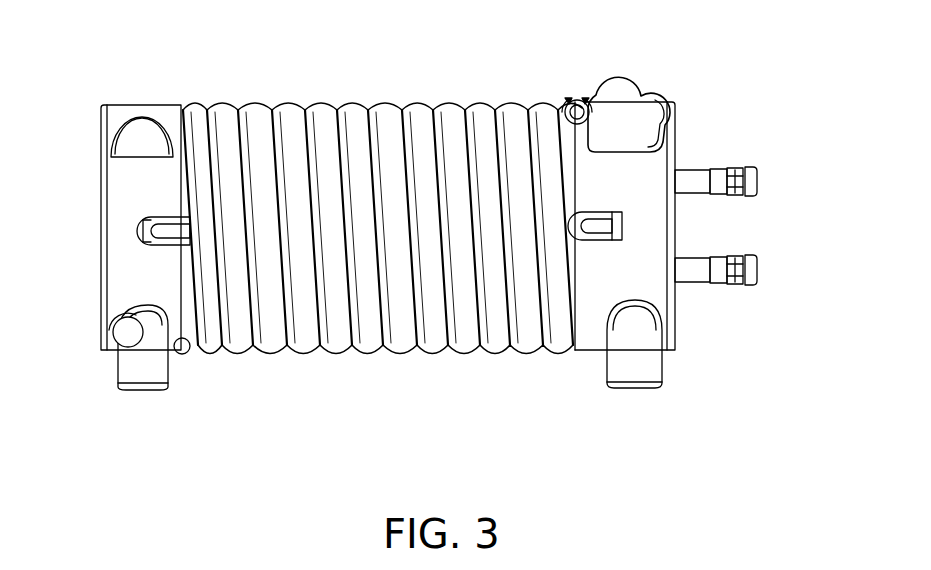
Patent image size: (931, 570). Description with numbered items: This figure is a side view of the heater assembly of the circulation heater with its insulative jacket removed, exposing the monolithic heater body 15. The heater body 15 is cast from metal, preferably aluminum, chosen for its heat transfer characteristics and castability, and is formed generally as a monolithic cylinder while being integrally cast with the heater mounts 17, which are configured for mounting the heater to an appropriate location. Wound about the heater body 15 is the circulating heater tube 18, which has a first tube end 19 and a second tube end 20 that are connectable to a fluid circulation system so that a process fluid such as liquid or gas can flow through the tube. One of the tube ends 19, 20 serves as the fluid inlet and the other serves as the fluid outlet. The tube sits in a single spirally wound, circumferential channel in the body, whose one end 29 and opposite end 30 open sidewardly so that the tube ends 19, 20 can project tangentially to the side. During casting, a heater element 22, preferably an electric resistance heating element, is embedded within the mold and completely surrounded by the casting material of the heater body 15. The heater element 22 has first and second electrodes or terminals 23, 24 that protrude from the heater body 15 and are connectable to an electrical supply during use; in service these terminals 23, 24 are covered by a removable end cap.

The heater body 15 is at (670, 122).
The heater mounts 17 is at (130, 373).
The circulating heater tube 18 is at (355, 107).
The first tube end 19 is at (577, 98).
The second tube end 20 is at (187, 357).
The heater element 22 is at (690, 178).
The first electrode or terminal 23 is at (712, 189).
The second electrode or terminal 24 is at (702, 272).
The channel end 29 is at (195, 350).
The second channel end 30 is at (568, 98).